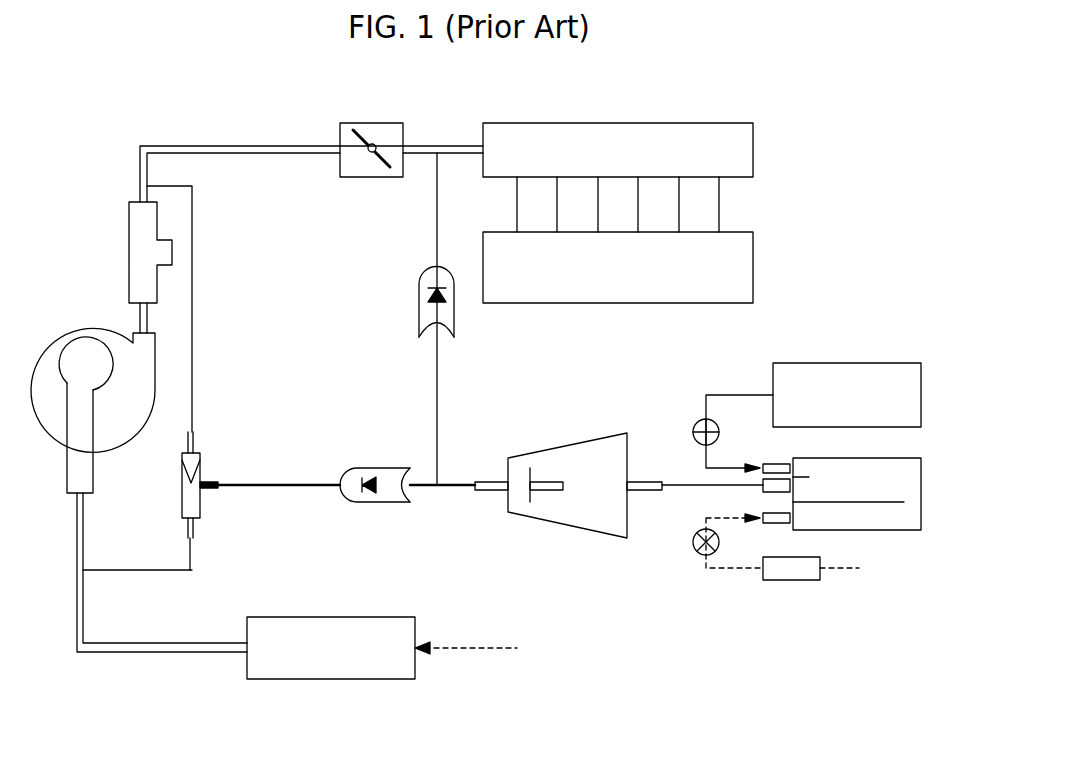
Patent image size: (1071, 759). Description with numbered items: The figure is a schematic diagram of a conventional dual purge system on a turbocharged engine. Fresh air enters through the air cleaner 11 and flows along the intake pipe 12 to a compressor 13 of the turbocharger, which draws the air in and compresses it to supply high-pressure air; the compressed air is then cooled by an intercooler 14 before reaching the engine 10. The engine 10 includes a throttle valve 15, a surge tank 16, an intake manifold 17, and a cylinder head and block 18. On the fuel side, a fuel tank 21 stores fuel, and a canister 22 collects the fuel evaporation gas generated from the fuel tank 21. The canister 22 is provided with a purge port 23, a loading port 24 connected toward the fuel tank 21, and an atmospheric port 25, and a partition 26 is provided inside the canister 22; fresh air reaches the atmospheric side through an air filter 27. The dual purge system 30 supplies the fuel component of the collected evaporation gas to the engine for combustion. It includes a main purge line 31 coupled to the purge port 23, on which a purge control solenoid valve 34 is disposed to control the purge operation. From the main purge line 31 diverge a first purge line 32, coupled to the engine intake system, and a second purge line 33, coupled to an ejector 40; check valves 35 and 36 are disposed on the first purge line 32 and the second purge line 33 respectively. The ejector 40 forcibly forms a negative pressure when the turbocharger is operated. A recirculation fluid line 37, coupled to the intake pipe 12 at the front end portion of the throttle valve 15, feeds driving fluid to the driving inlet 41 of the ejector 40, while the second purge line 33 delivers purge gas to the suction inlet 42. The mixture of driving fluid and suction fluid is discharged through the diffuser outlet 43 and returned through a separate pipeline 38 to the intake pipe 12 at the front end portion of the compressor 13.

The engine 10 is at (778, 114).
The air cleaner 11 is at (336, 617).
The intake pipe 12 is at (262, 150).
The compressor 13 is at (86, 330).
The intercooler 14 is at (140, 238).
The throttle valve 15 is at (371, 123).
The surge tank 16 is at (755, 145).
The intake manifold 17 is at (705, 203).
The cylinder head and block 18 is at (755, 265).
The fuel tank 21 is at (860, 368).
The canister 22 is at (900, 466).
The purge port 23 is at (785, 487).
The loading port 24 is at (768, 463).
The atmospheric port 25 is at (758, 522).
The partition 26 is at (855, 502).
The air filter 27 is at (794, 582).
The dual purge system 30 is at (468, 523).
The main purge line 31 is at (676, 482).
The first purge line 32 is at (436, 383).
The second purge line 33 is at (318, 483).
The purge control solenoid valve 34 is at (556, 454).
The check valve 35 is at (420, 308).
The check valve 36 is at (366, 502).
The recirculation fluid line 37 is at (193, 298).
The separate pipeline 38 is at (115, 570).
The ejector 40 is at (203, 497).
The driving inlet 41 is at (192, 433).
The suction inlet 42 is at (221, 484).
The diffuser outlet 43 is at (192, 545).